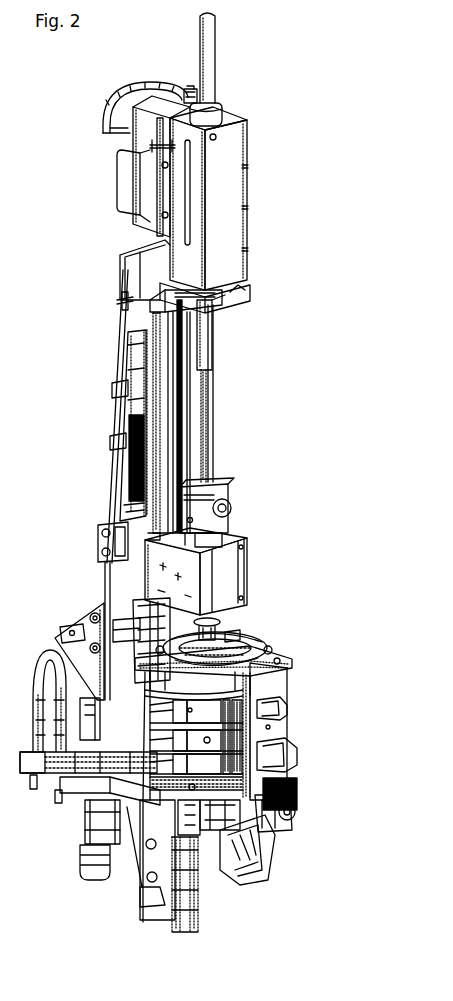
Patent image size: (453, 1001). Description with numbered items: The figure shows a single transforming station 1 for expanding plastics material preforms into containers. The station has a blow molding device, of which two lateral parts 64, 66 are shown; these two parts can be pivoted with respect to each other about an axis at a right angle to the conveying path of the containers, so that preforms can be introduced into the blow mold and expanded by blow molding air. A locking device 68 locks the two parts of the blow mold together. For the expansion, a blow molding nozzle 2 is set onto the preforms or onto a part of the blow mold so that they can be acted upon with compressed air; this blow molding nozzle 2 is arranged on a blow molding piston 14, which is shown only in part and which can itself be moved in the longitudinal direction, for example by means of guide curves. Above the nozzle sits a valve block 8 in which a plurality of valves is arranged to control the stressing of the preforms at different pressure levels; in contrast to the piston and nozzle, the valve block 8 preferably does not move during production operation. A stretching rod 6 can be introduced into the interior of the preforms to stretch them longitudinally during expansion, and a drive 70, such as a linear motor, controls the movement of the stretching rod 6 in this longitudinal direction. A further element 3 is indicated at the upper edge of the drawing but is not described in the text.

The transforming station 1 is at (317, 333).
The blow molding nozzle 2 is at (240, 630).
The robot arm 3 is at (398, 0).
The stretching rod 6 is at (208, 435).
The valve block 8 is at (225, 567).
The blow molding piston 14 is at (213, 623).
The lateral part 64 is at (145, 797).
The lateral part 66 is at (285, 663).
The locking device 68 is at (277, 723).
The drive 70 is at (230, 178).